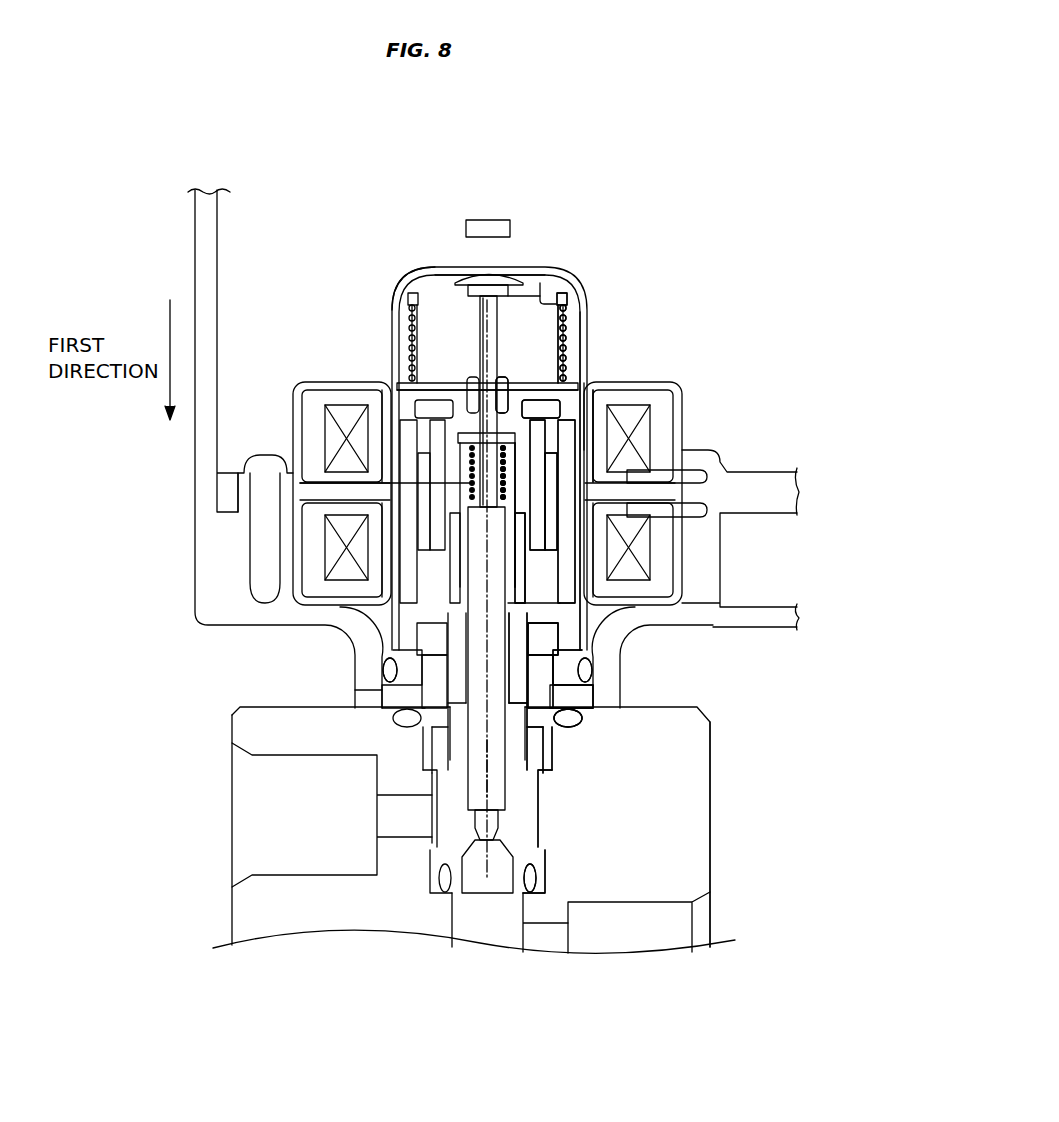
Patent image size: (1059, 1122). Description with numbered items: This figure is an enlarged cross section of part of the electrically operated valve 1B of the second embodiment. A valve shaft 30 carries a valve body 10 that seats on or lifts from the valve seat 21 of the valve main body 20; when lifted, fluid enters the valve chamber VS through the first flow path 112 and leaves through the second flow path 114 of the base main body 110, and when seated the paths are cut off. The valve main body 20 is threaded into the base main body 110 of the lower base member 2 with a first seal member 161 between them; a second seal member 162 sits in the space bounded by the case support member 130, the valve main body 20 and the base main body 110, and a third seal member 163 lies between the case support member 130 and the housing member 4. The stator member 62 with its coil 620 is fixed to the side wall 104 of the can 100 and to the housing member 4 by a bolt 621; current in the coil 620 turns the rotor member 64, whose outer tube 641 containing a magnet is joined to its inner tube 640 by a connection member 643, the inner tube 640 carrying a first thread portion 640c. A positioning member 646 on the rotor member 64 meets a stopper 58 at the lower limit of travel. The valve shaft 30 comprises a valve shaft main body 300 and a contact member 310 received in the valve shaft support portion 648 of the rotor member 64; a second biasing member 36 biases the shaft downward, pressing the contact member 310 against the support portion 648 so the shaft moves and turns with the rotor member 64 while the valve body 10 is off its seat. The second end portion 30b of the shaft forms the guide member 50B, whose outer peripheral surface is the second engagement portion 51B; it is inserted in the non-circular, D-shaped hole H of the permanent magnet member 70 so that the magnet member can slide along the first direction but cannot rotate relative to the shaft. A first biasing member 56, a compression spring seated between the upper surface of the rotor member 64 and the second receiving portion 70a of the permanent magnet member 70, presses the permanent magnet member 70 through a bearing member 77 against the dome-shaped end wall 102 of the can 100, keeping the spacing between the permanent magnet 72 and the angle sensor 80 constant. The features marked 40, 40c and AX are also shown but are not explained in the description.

The electrically operated valve 1B is at (498, 156).
The permanent magnet member 70 is at (587, 300).
The permanent magnet 72 is at (580, 315).
The can 100 is at (545, 286).
The end wall 102 is at (448, 270).
The second receiving portion 70a is at (400, 285).
The angle sensor 80 is at (482, 226).
The bearing member 77 is at (492, 278).
The hole H is at (505, 297).
The second engagement portion 51B is at (415, 295).
The side wall 104 is at (470, 318).
The first biasing member 56 is at (412, 330).
The valve shaft main body 300 is at (480, 353).
The contact member 310 is at (423, 362).
The guide member 50B is at (500, 312).
The second end portion 30b is at (500, 325).
The rotor member 64 is at (590, 392).
The inner tube 640 is at (625, 435).
The connection member 643 is at (585, 400).
The outer tube 641 is at (600, 420).
The coil 620 is at (670, 460).
The stator member 62 is at (727, 472).
The valve shaft support portion 648 is at (470, 425).
The housing member 4 is at (195, 484).
The bolt 621 is at (258, 545).
The second biasing member 36 is at (470, 497).
The first thread portion 640c is at (523, 540).
The plunger wall 40c is at (530, 577).
The valve shaft 30 is at (360, 632).
The positioning member 646 is at (547, 605).
The third seal member 163 is at (383, 680).
The stopper 58 is at (555, 650).
The case support member 130 is at (360, 700).
The bearing retainer 40 is at (560, 672).
The second seal member 162 is at (575, 715).
The valve main body 20 is at (440, 737).
The lower base member 2 is at (700, 774).
The base main body 110 is at (700, 737).
The valve chamber VS is at (455, 750).
The axis AX is at (480, 780).
The valve seat 21 is at (470, 818).
The valve body 10 is at (497, 830).
The first seal member 161 is at (527, 873).
The first flow path 112 is at (548, 933).
The second flow path 114 is at (387, 830).